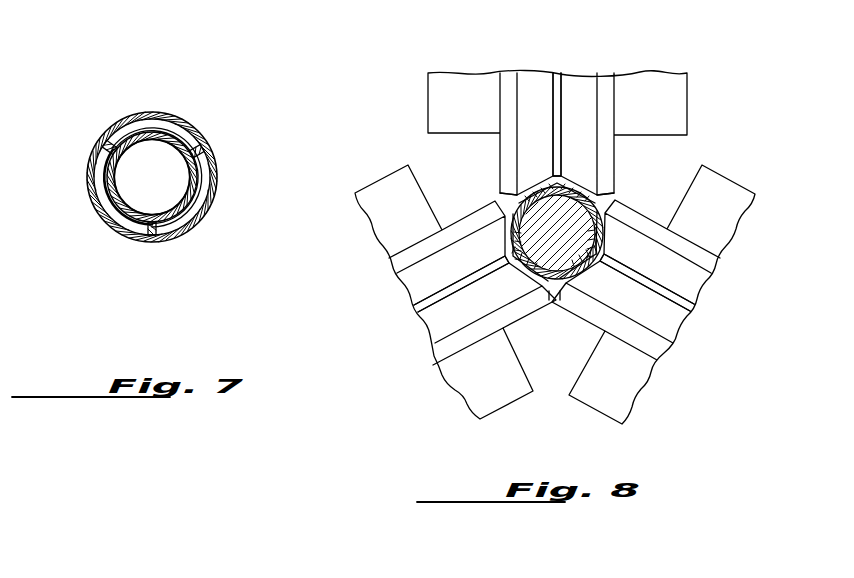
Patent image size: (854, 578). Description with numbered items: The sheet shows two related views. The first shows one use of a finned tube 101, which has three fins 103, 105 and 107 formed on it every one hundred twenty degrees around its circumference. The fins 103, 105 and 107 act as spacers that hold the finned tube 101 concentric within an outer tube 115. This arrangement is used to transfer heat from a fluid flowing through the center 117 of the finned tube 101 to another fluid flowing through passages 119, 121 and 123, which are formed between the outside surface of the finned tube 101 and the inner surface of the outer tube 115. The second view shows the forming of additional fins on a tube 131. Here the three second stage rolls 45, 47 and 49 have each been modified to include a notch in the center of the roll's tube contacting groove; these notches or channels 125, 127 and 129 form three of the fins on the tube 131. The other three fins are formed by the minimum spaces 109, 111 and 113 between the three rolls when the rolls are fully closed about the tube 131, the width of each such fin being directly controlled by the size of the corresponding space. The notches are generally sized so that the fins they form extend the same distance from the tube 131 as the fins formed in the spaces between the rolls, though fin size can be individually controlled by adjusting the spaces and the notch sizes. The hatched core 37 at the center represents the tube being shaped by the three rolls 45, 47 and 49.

In FIG. 7, the finned tube 101 is at (163, 132).
In FIG. 7, the fin 103 is at (194, 152).
In FIG. 7, the fin 105 is at (152, 234).
In FIG. 7, the fin 107 is at (105, 142).
In FIG. 7, the outer tube 115 is at (214, 186).
In FIG. 7, the center 117 is at (138, 187).
In FIG. 7, the passage 119 is at (190, 212).
In FIG. 7, the passage 121 is at (124, 128).
In FIG. 7, the passage 123 is at (108, 204).
In FIG. 8, the core 37 is at (568, 244).
In FIG. 8, the second stage roll 45 is at (545, 142).
In FIG. 8, the second stage roll 47 is at (434, 272).
In FIG. 8, the second stage roll 49 is at (639, 275).
In FIG. 8, the minimum space 109 is at (617, 195).
In FIG. 8, the minimum space 111 is at (553, 298).
In FIG. 8, the minimum space 113 is at (501, 193).
In FIG. 8, the notch 125 is at (556, 105).
In FIG. 8, the notch 127 is at (690, 300).
In FIG. 8, the notch 129 is at (425, 302).
In FIG. 8, the tube 131 is at (528, 192).